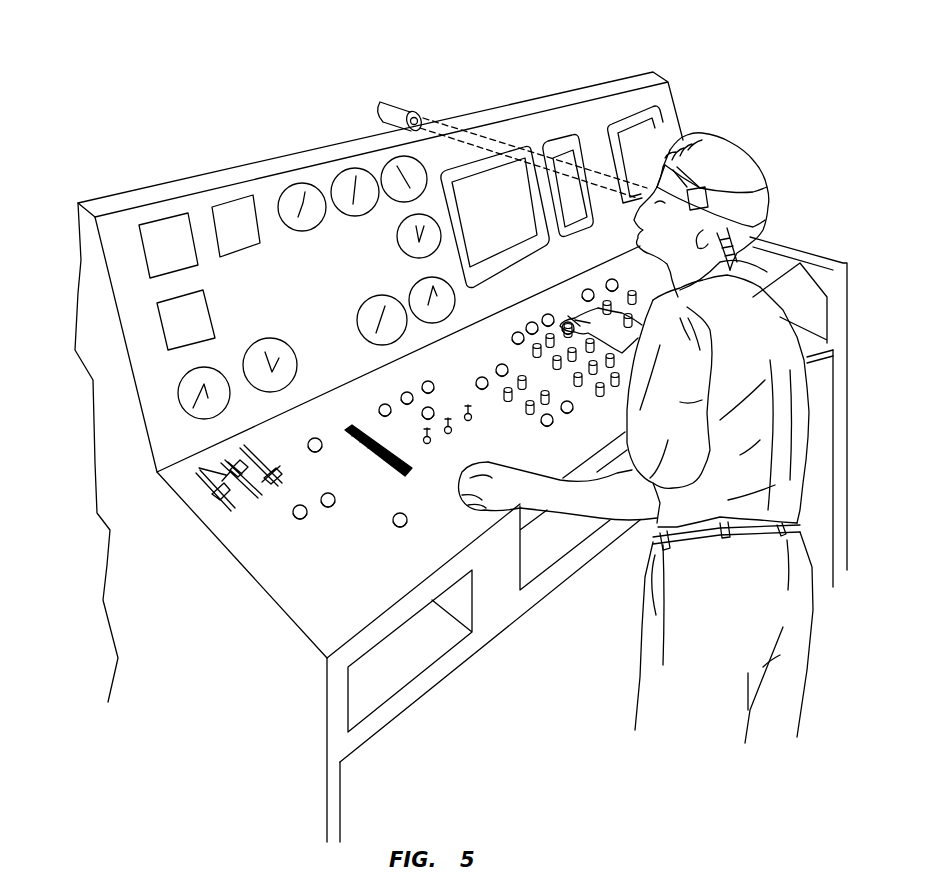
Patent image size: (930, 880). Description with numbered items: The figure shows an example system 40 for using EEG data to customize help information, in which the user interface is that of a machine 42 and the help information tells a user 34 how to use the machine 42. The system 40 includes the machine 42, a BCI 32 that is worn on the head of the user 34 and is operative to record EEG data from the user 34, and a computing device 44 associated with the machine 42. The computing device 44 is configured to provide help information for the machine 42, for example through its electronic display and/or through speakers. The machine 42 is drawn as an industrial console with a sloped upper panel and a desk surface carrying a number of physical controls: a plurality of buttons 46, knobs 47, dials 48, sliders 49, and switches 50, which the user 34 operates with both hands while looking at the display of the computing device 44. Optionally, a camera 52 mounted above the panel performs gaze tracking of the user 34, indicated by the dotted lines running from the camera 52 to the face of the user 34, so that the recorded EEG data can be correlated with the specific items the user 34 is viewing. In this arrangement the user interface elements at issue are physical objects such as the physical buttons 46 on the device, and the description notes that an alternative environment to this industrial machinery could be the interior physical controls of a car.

The system 40 is at (737, 66).
The machine 42 is at (163, 437).
The computing device 44 is at (493, 187).
The buttons 46 is at (383, 540).
The knobs 47 is at (520, 416).
The dials 48 is at (392, 242).
The sliders 49 is at (258, 493).
The switches 50 is at (455, 442).
The camera 52 is at (378, 102).
The BCI 32 is at (750, 205).
The user 34 is at (817, 260).